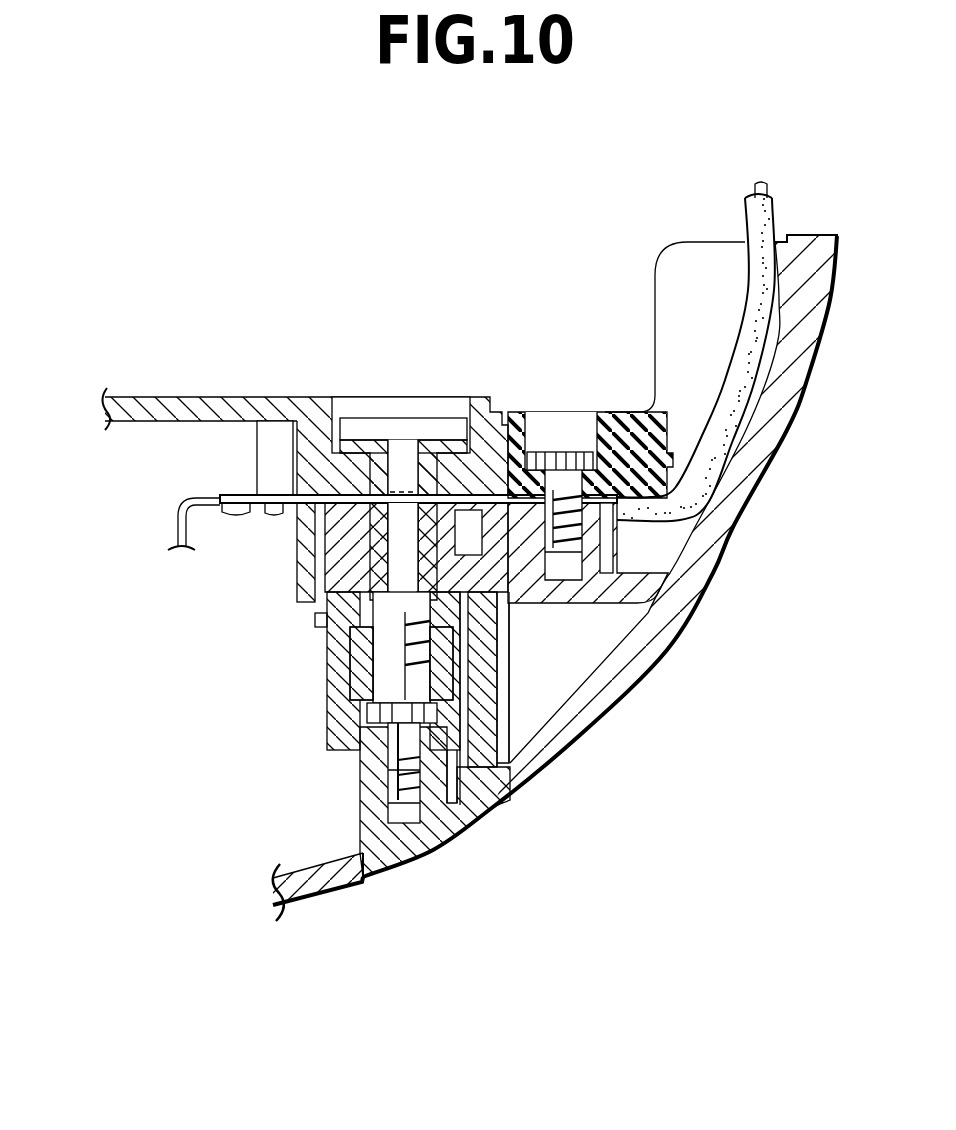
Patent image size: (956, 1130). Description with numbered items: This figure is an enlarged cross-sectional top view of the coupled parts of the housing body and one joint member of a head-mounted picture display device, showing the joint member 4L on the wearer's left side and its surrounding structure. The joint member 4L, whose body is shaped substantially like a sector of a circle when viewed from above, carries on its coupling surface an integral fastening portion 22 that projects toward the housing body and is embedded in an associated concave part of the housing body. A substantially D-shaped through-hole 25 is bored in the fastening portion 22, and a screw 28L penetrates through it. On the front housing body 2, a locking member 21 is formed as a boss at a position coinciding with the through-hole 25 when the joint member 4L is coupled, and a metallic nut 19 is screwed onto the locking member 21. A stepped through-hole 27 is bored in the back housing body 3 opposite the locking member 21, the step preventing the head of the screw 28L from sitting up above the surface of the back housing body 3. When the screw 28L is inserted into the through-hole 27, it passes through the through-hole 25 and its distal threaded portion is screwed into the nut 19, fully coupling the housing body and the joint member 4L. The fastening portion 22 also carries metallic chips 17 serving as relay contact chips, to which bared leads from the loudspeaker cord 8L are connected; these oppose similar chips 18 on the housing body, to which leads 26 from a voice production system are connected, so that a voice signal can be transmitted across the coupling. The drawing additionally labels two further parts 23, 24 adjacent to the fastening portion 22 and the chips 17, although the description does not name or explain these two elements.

The front housing body 2 is at (317, 880).
The back housing body 3 is at (215, 397).
The joint member 4L is at (743, 487).
The loudspeaker cord 8L is at (772, 210).
The metallic chips 17 is at (534, 508).
The chips 18 is at (253, 497).
The metallic nut 19 is at (352, 675).
The locking member 21 is at (338, 718).
The fastening portion 22 is at (520, 588).
The holder block 23 is at (616, 418).
The screw 24 is at (555, 450).
The through-hole 25 is at (372, 535).
The leads 26 is at (178, 524).
The through-hole 27 is at (355, 388).
The screw 28L is at (440, 430).